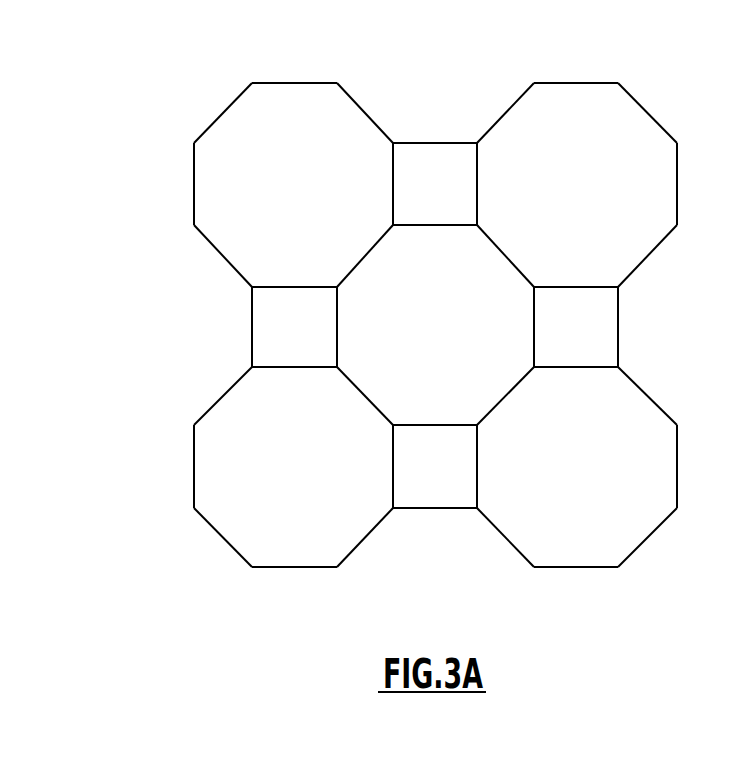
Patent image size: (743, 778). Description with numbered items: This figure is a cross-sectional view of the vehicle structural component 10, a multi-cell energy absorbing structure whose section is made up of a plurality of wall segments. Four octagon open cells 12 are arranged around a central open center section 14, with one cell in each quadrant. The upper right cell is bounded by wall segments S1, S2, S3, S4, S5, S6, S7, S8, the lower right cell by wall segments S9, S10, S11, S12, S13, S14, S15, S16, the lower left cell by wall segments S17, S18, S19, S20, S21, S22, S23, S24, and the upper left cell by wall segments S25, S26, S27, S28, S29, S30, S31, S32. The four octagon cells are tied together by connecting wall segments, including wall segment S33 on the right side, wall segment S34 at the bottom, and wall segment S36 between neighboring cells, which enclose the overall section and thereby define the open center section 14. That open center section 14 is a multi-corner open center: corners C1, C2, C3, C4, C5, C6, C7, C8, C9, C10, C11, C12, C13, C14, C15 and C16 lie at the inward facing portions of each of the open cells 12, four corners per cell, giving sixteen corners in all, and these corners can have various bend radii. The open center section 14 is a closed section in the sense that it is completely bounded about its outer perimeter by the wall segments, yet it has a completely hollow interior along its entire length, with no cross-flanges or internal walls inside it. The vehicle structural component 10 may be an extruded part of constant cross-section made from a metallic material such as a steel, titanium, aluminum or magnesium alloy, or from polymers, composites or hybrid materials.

The vehicle structural component 10 is at (196, 83).
The open cell 12 is at (318, 115).
The open center section 14 is at (590, 317).
The wall segment S1 is at (576, 62).
The wall segment S2 is at (647, 113).
The wall segment S3 is at (662, 184).
The wall segment S4 is at (652, 256).
The wall segment S5 is at (576, 303).
The wall segment S6 is at (505, 256).
The wall segment S7 is at (490, 184).
The wall segment S8 is at (505, 108).
The wall segment S9 is at (576, 347).
The wall segment S10 is at (653, 396).
The wall segment S11 is at (656, 466).
The wall segment S12 is at (652, 538).
The wall segment S13 is at (576, 584).
The wall segment S14 is at (509, 537).
The wall segment S15 is at (495, 466).
The wall segment S16 is at (501, 394).
The wall segment S17 is at (294, 346).
The wall segment S18 is at (366, 392).
The wall segment S19 is at (414, 466).
The wall segment S20 is at (372, 538).
The wall segment S21 is at (294, 584).
The wall segment S22 is at (219, 537).
The wall segment S23 is at (175, 466).
The wall segment S24 is at (217, 392).
The wall segment S25 is at (294, 65).
The wall segment S26 is at (368, 113).
The wall segment S27 is at (412, 184).
The wall segment S28 is at (372, 256).
The wall segment S29 is at (294, 301).
The wall segment S30 is at (223, 253).
The wall segment S31 is at (213, 184).
The wall segment S32 is at (228, 113).
The wall segment S33 is at (638, 327).
The wall segment S34 is at (435, 527).
The wall segment S36 is at (344, 238).
The corner C1 is at (393, 143).
The corner C2 is at (477, 143).
The corner C3 is at (477, 225).
The corner C4 is at (534, 287).
The corner C5 is at (618, 286).
The corner C6 is at (618, 366).
The corner C7 is at (533, 366).
The corner C8 is at (477, 425).
The corner C9 is at (477, 508).
The corner C10 is at (393, 508).
The corner C11 is at (393, 426).
The corner C12 is at (338, 367).
The corner C13 is at (252, 367).
The corner C14 is at (252, 287).
The corner C15 is at (337, 287).
The corner C16 is at (393, 226).